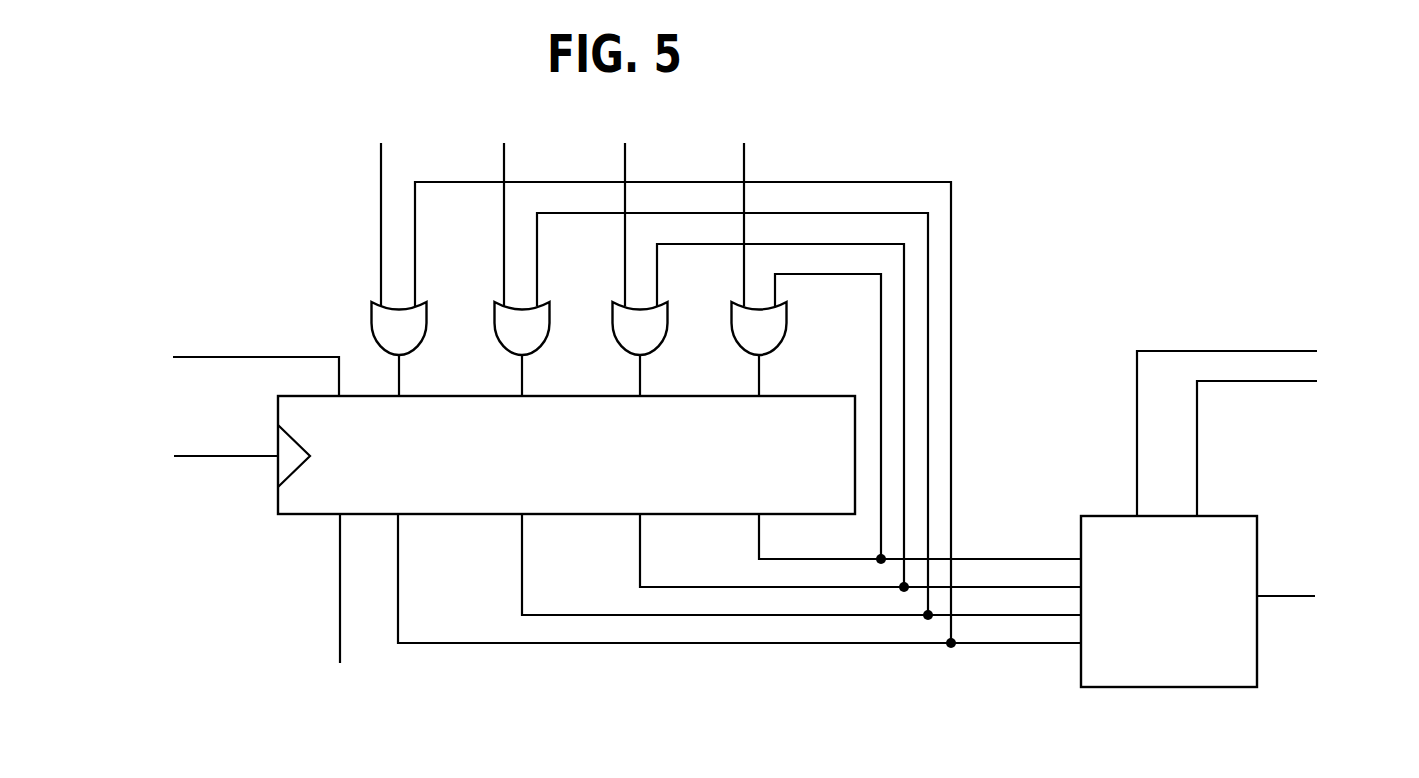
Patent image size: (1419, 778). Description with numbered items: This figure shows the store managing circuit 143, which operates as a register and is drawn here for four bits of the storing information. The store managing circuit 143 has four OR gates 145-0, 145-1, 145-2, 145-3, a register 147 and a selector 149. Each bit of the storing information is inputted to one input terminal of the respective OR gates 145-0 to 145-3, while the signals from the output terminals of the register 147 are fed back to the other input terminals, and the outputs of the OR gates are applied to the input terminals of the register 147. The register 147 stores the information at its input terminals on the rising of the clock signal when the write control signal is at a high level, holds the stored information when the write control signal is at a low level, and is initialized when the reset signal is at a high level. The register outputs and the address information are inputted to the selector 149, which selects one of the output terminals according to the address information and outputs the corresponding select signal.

The store managing circuit 143 is at (1040, 123).
The OR gate 145-3 is at (425, 333).
The OR gate 145-2 is at (548, 333).
The OR gate 145-1 is at (666, 333).
The OR gate 145-0 is at (785, 333).
The register 147 is at (302, 514).
The selector 149 is at (1081, 666).